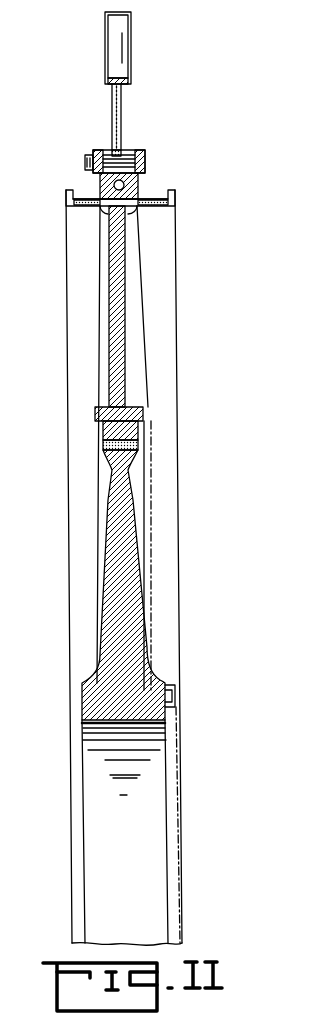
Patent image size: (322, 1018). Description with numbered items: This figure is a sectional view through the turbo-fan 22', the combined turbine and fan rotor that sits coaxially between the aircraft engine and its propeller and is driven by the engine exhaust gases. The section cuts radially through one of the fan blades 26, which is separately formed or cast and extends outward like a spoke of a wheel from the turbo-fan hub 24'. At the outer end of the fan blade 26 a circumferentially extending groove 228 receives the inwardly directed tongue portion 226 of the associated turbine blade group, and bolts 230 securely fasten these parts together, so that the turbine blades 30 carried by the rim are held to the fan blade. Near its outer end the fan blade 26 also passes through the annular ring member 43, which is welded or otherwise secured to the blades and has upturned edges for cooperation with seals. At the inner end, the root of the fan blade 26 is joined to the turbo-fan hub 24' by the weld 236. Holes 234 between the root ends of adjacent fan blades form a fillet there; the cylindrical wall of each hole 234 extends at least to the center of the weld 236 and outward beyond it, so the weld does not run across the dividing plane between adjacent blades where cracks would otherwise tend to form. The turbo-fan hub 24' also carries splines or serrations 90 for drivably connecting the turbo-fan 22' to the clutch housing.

The turbine blades 30 is at (122, 48).
The tongue portion 226 is at (125, 152).
The bolts 230 is at (85, 163).
The groove 228 is at (122, 188).
The annular ring member 43 is at (66, 199).
The fan blades 26 is at (110, 323).
The holes 234 is at (118, 430).
The weld 236 is at (105, 446).
The turbo-fan 22' is at (91, 567).
The turbo-fan hub 24' is at (93, 585).
The splines or serrations 90 is at (170, 691).